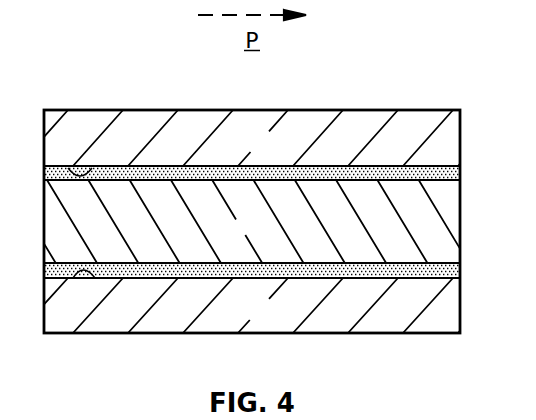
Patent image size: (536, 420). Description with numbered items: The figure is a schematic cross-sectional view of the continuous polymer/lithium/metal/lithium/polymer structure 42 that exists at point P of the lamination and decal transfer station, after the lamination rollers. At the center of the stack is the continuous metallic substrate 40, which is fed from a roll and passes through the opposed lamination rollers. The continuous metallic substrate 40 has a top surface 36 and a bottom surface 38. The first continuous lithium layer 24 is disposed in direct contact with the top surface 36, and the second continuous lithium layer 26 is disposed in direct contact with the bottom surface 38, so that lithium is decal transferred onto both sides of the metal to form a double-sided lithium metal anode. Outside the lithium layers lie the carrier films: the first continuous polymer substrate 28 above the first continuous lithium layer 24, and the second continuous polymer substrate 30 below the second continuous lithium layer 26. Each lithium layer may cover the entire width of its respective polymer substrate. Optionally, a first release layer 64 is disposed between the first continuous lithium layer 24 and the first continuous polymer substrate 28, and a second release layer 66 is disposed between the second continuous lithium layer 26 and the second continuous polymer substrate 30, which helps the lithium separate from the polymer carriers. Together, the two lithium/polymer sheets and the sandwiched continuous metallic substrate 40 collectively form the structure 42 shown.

The continuous polymer/lithium/metal/lithium/polymer structure 42 is at (390, 87).
The first continuous polymer substrate 28 is at (238, 150).
The continuous metallic substrate 40 is at (238, 231).
The second continuous polymer substrate 30 is at (238, 316).
The top surface 36 is at (383, 173).
The bottom surface 38 is at (125, 278).
The first continuous lithium layer 24 is at (199, 167).
The second continuous lithium layer 26 is at (345, 278).
The first release layer 64 is at (68, 168).
The second release layer 66 is at (73, 279).